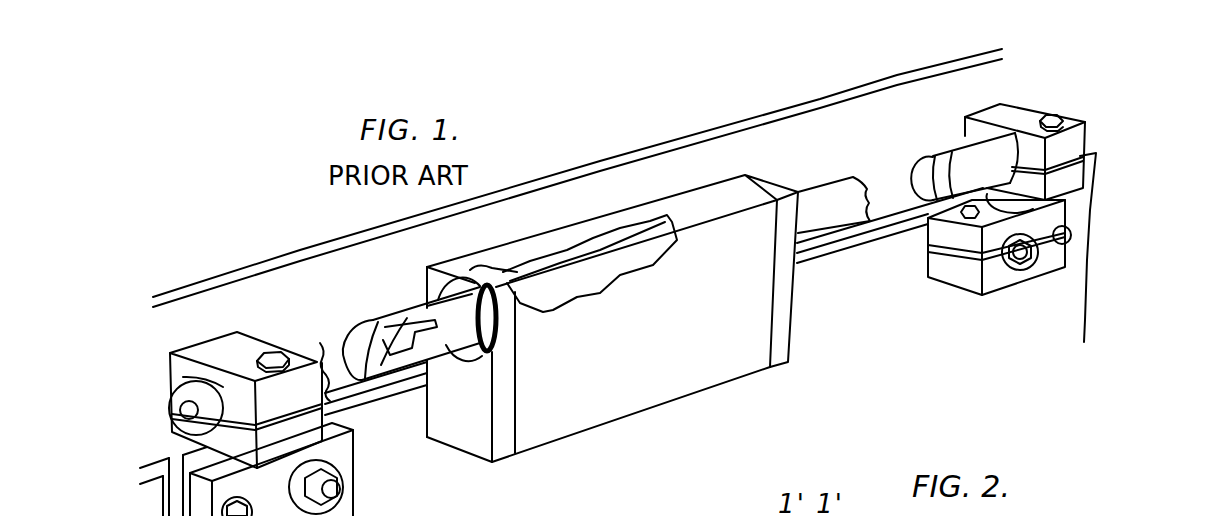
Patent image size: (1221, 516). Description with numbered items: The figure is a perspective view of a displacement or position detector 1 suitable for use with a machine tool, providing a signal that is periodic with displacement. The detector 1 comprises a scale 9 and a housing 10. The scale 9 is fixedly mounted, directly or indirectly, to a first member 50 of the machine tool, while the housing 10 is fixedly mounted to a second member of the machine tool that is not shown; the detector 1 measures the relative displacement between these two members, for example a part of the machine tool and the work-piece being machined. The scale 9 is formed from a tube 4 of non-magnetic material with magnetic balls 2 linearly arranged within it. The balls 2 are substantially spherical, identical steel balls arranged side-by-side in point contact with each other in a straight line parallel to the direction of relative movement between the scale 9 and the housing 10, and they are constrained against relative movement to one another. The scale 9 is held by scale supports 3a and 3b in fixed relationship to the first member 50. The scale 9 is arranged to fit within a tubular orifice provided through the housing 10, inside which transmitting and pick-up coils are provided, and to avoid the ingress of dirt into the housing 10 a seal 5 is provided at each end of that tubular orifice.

The detector 1 is at (795, 330).
The magnetic balls 2 is at (910, 172).
The scale support 3a is at (192, 352).
The scale support 3b is at (1025, 112).
The tube 4 is at (378, 320).
The seal 5 is at (478, 285).
The scale 9 is at (828, 188).
The housing 10 is at (538, 423).
The first member 50 is at (1085, 220).